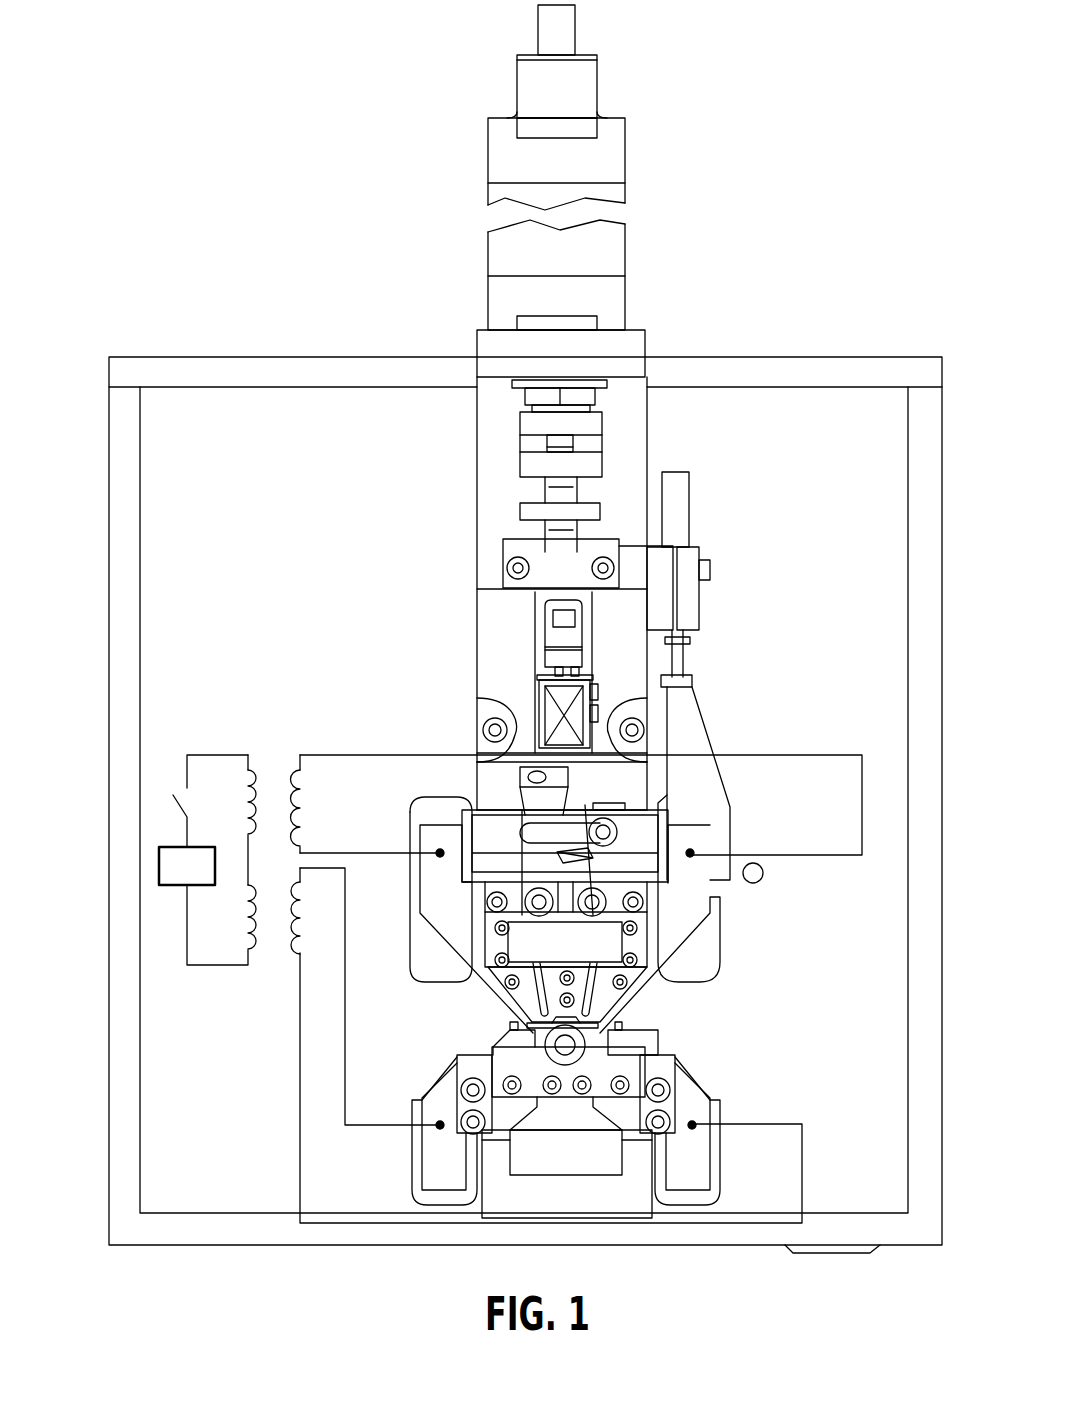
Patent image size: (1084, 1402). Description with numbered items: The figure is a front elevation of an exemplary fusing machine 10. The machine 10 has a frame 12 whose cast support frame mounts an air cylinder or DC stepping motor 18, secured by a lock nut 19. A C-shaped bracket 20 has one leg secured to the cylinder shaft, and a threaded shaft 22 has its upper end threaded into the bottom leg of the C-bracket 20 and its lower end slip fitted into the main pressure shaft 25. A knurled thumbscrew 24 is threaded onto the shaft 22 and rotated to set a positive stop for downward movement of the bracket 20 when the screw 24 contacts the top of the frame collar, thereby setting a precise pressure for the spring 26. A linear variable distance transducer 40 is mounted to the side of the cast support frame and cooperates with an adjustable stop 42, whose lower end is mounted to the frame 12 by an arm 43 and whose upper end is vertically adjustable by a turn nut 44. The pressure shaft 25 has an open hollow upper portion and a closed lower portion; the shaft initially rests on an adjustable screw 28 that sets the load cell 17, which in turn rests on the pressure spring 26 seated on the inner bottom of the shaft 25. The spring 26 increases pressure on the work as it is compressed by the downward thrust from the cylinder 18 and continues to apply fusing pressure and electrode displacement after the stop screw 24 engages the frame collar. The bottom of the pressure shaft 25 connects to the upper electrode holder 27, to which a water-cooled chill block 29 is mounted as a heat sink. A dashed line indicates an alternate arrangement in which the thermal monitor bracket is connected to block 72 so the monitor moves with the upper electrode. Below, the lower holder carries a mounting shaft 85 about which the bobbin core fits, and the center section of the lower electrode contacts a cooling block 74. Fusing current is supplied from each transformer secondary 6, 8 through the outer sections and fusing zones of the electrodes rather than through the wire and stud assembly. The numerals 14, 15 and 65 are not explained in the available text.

The fusing machine 10 is at (321, 249).
The frame 12 is at (652, 447).
The frame 14 is at (828, 356).
The right clamp arm 15 is at (705, 950).
The load cell 17 is at (540, 658).
The air cylinder or DC stepping motor 18 is at (613, 257).
The lock nut 19 is at (533, 399).
The C-shaped bracket 20 is at (528, 425).
The threaded shaft 22 is at (560, 492).
The knurled thumbscrew 24 is at (530, 512).
The main pressure shaft 25 is at (530, 610).
The pressure spring 26 is at (550, 707).
The upper electrode holder 27 is at (580, 787).
The adjustable screw 28 is at (558, 637).
The water-cooled chill block 29 is at (577, 957).
The linear variable distance transducer (LVDT) 40 is at (690, 597).
The adjustable stop 42 is at (680, 660).
The arm 43 is at (705, 775).
The turn nut 44 is at (690, 640).
The secondary 6 is at (300, 770).
The secondary 8 is at (292, 950).
The left clamp arm 65 is at (425, 962).
The block 72 is at (547, 1032).
The cooling block 74 is at (598, 1155).
The mounting shaft 85 is at (565, 1045).